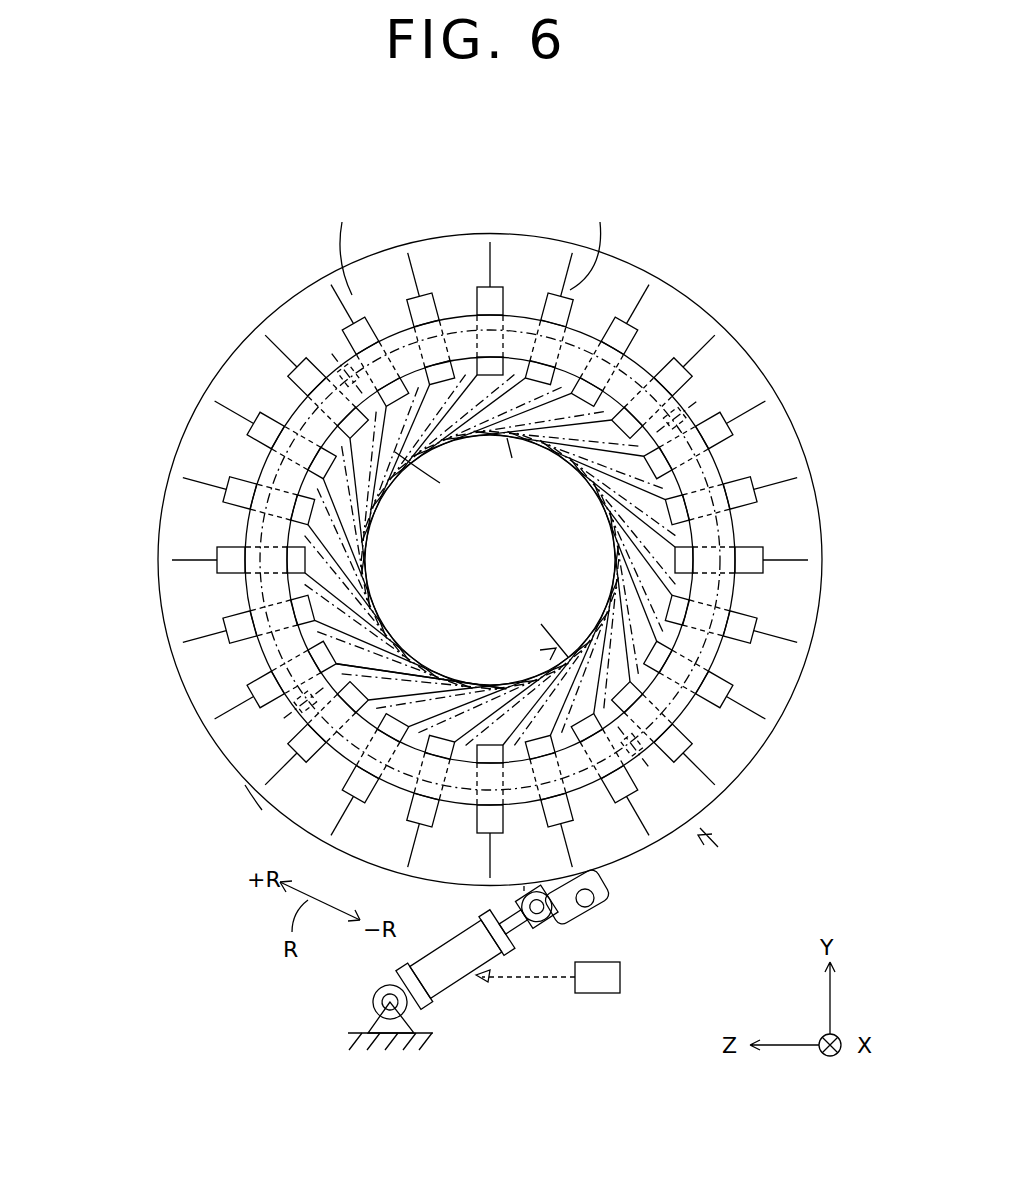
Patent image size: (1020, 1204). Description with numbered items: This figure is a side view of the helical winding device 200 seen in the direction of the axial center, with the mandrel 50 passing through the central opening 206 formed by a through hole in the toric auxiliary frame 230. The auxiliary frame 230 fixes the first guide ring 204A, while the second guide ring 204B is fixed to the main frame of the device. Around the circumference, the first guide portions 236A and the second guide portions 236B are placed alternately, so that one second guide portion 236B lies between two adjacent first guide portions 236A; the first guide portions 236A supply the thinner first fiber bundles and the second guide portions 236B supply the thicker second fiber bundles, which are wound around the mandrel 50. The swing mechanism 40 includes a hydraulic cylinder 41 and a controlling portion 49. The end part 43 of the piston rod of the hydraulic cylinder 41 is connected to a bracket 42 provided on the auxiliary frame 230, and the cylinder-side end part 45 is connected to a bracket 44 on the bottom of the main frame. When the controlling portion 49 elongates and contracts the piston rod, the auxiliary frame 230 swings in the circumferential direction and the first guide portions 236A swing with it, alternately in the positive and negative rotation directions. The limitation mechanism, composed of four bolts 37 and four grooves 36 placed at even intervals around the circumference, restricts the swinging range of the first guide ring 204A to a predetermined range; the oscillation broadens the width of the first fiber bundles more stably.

The helical winding device 200 is at (682, 246).
The opening 206 is at (735, 530).
The auxiliary frame 230 is at (245, 790).
The mandrel 50 is at (505, 577).
The first guide portion 236A is at (362, 322).
The second guide portion 236B is at (425, 305).
The first guide ring 204A is at (285, 676).
The second guide ring 204B is at (285, 698).
The groove 36 is at (345, 368).
The bolt 37 is at (337, 367).
The swing mechanism 40 is at (455, 957).
The hydraulic cylinder 41 is at (463, 920).
The bracket 42 is at (567, 917).
The end part of piston rod 43 is at (547, 923).
The bracket 44 is at (367, 1022).
The cylinder-side end part 45 is at (380, 985).
The controlling portion 49 is at (598, 993).